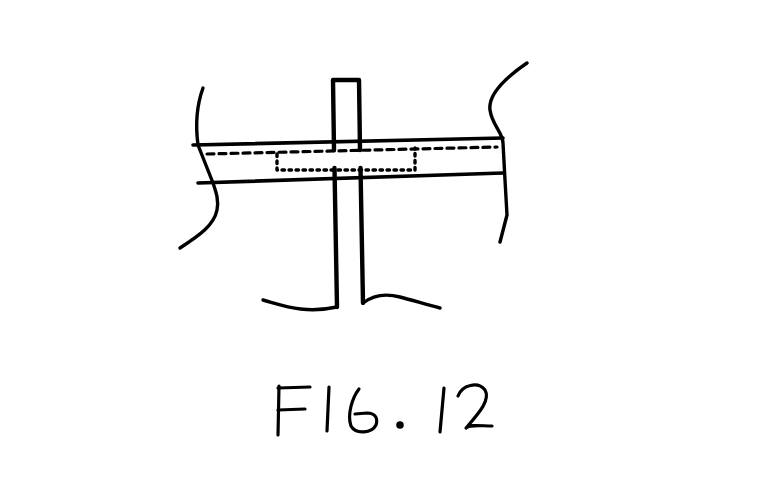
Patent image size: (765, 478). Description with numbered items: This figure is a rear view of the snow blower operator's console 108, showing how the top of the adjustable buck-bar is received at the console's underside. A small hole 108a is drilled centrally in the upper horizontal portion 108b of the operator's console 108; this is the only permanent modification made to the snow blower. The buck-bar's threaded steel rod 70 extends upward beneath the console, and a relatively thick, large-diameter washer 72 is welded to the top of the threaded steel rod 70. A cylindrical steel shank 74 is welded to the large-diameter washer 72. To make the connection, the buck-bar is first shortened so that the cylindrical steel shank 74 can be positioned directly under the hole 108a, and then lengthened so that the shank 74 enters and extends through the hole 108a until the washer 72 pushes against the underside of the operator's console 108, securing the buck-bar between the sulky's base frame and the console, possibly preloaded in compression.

The threaded steel rod 70 is at (364, 238).
The large-diameter washer 72 is at (293, 172).
The cylindrical steel shank 74 is at (345, 97).
The operator's console 108 is at (487, 158).
The hole 108a is at (367, 140).
The upper horizontal portion 108b is at (242, 145).